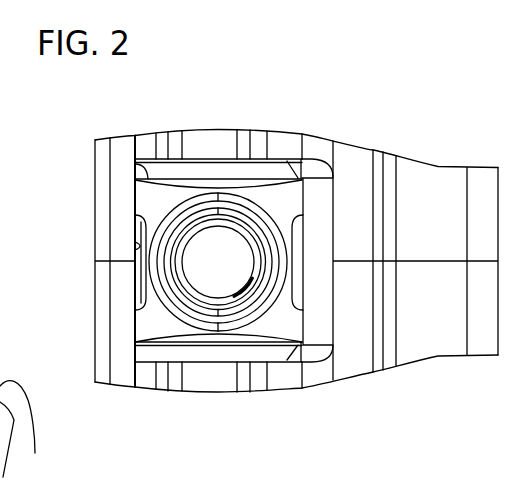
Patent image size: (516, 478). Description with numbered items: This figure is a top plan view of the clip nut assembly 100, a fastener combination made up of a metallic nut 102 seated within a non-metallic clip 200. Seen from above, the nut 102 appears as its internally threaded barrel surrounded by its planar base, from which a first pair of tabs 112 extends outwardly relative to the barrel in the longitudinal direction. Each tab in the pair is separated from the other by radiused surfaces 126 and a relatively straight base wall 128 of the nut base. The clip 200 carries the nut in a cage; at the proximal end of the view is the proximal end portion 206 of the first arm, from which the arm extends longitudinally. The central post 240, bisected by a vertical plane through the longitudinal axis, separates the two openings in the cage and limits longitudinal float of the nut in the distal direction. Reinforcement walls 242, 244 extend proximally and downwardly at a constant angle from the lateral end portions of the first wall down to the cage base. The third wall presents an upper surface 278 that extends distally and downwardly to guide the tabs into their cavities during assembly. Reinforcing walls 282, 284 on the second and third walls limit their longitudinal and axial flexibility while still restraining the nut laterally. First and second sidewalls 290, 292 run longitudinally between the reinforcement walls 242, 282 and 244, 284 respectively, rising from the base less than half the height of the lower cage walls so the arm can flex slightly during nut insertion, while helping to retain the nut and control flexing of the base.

The clip nut assembly 100 is at (186, 85).
The nut 102 is at (162, 187).
The first pair of tabs 112 is at (135, 163).
The radiused surfaces 126 is at (135, 227).
The base wall 128 is at (146, 278).
The clip 200 is at (427, 122).
The proximal end portion 206 is at (29, 429).
The central post 240 is at (136, 246).
The reinforcement wall 242 is at (145, 147).
The reinforcement wall 244 is at (147, 373).
The upper surface 278 is at (318, 320).
The reinforcing wall 282 is at (282, 133).
The reinforcing wall 284 is at (270, 390).
The first sidewall 290 is at (200, 148).
The second sidewall 292 is at (208, 376).